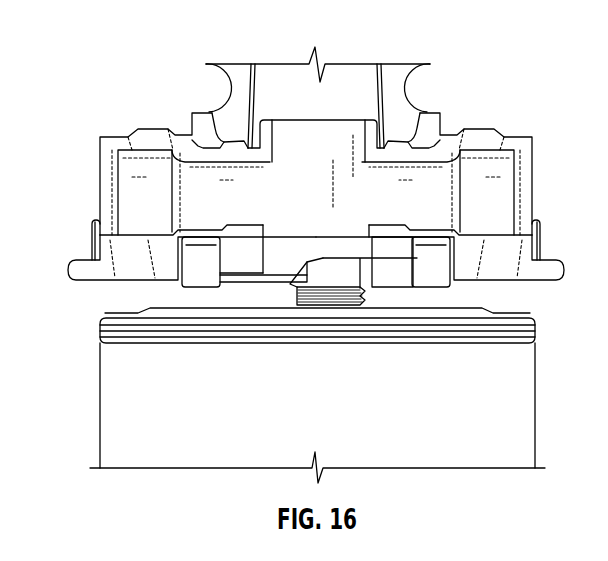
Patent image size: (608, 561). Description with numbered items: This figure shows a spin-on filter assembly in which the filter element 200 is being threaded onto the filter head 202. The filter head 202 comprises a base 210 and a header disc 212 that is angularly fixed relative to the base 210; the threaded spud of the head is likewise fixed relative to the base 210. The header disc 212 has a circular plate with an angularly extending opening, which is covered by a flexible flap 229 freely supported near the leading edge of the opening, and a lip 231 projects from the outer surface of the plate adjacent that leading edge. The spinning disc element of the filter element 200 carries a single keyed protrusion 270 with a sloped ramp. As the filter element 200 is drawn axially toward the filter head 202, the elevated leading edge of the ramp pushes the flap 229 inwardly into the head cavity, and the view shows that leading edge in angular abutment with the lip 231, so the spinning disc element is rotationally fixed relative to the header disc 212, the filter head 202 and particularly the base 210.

The filter element 200 is at (548, 399).
The filter head 202 is at (264, 52).
The base 210 is at (532, 212).
The header disc 212 is at (395, 245).
The flexible flap 229 is at (273, 232).
The lip 231 is at (295, 288).
The keyed protrusion 270 is at (233, 297).